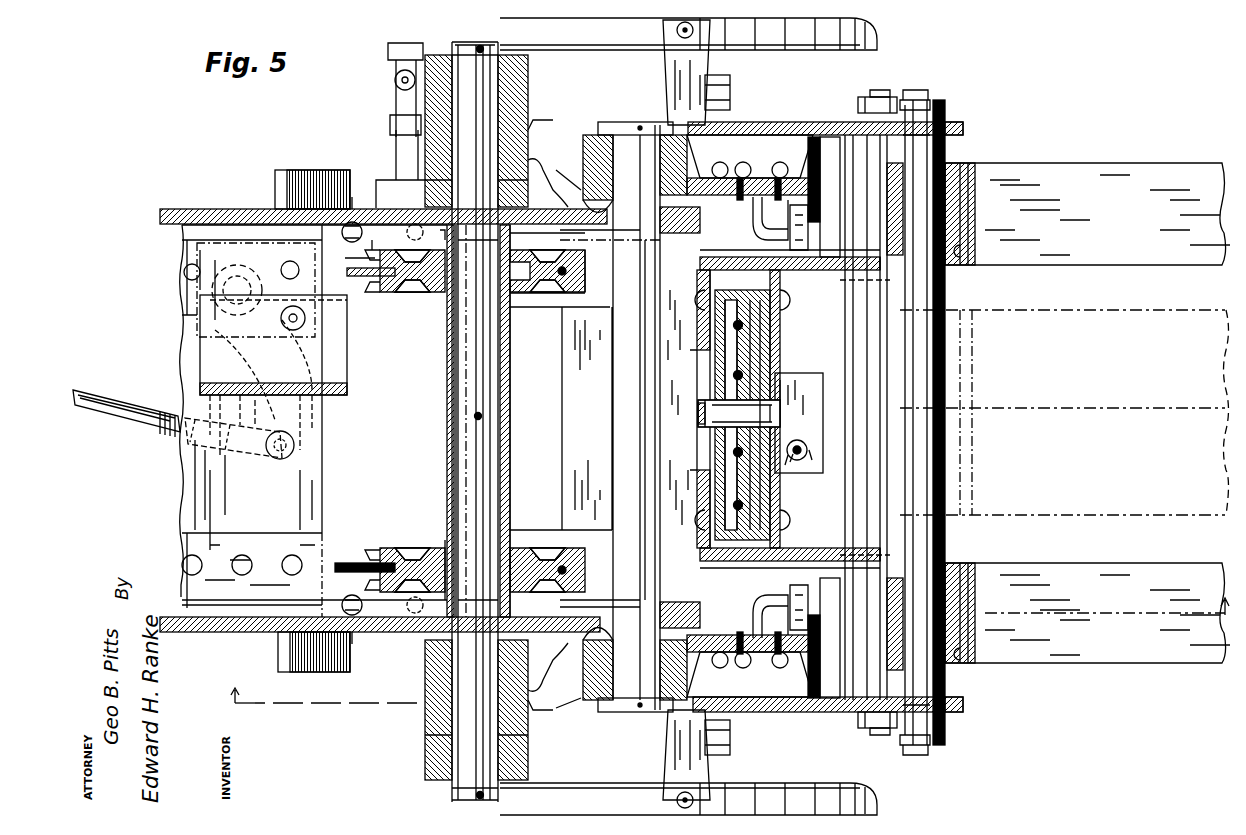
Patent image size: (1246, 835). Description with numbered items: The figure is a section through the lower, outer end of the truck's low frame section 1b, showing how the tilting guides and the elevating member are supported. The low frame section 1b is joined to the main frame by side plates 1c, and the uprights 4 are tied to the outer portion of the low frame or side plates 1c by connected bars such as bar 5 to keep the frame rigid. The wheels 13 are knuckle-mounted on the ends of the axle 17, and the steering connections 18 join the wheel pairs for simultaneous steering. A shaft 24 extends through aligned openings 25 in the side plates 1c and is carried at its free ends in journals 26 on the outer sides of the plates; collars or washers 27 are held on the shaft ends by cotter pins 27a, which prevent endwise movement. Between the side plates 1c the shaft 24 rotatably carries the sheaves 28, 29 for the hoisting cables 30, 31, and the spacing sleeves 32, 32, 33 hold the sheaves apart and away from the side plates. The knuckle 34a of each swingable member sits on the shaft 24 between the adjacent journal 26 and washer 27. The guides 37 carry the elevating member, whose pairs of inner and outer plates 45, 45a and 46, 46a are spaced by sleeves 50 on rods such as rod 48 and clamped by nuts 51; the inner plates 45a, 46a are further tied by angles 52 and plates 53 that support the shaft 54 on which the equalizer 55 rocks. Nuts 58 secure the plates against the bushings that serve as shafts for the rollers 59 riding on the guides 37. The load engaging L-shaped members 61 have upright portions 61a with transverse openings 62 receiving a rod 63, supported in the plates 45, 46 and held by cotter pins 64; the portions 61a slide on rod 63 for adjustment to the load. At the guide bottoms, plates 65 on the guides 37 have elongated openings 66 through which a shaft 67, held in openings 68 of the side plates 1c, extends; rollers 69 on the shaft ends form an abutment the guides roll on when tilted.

The low frame section 1b is at (332, 532).
The side plates 1c is at (210, 208).
The uprights 4 is at (725, 517).
The connecting bar 5 is at (272, 177).
The wheels 13 is at (877, 32).
The axle 17 is at (708, 150).
The steering connections 18 is at (160, 422).
The shaft 24 is at (458, 445).
The openings 25 is at (528, 143).
The journals 26 is at (523, 123).
The collars or washers 27 is at (515, 58).
The cotter pins 27a is at (480, 47).
The reeving element 28 is at (402, 547).
The reeving element 29 is at (550, 302).
The flexible member 30 is at (360, 560).
The flexible member 31 is at (382, 258).
The spacing sleeves 32 is at (407, 604).
The spacing sleeve 33 is at (444, 366).
The knuckle 34a is at (435, 56).
The guides 37 is at (759, 426).
The outer plate 45 is at (758, 712).
The inner plate 45a is at (810, 595).
The outer plate 46 is at (770, 118).
The inner plate 46a is at (810, 250).
The rod 48 is at (867, 405).
The sleeves 50 is at (780, 430).
The nuts 51 is at (897, 110).
The angles 52 is at (780, 328).
The plates 53 is at (770, 370).
The shaft 54 is at (704, 422).
The equalizer 55 is at (698, 365).
The nuts 58 is at (853, 272).
The roller 59 is at (820, 150).
The L-shaped members 61 is at (1123, 261).
The upright portions 61a is at (970, 207).
The transverse openings 62 is at (1018, 178).
The rod 63 is at (946, 560).
The cotter pins 64 is at (943, 110).
The plate 65 is at (753, 208).
The elongated opening 66 is at (607, 598).
The shaft 67 is at (610, 415).
The openings 68 is at (610, 222).
The rollers 69 is at (605, 422).